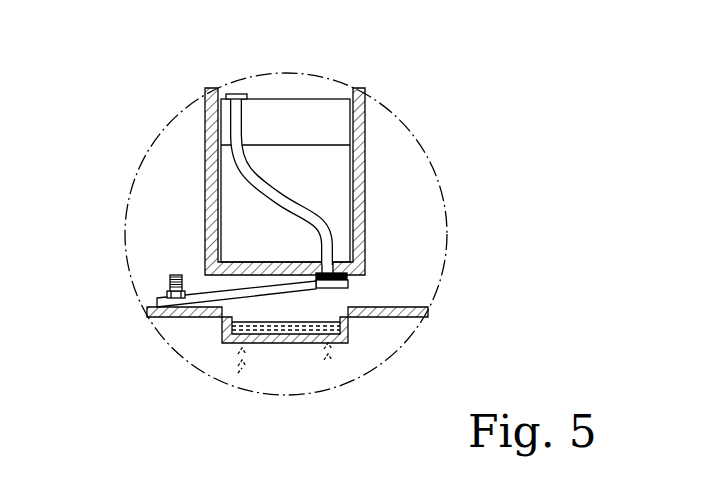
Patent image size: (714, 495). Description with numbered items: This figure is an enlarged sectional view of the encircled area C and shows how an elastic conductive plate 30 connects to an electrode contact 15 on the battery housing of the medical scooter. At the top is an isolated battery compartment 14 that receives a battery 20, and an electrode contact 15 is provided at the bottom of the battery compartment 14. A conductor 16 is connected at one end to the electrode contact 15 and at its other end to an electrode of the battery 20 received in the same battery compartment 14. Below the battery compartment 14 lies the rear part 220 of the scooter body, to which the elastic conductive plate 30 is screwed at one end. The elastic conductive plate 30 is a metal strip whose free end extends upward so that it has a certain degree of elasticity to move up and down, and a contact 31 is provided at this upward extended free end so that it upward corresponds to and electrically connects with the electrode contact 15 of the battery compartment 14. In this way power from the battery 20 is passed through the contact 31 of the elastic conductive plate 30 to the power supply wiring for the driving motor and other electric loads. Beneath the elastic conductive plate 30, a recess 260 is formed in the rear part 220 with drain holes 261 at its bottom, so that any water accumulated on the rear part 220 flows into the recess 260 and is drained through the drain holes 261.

The battery compartment 14 is at (320, 90).
The electrode contact 15 is at (348, 277).
The conductor 16 is at (251, 100).
The battery 20 is at (333, 190).
The elastic conductive plate 30 is at (236, 296).
The contact 31 is at (344, 289).
The rear part 220 is at (150, 316).
The recess 260 is at (230, 311).
The drain hole 261 is at (243, 342).
The encircled area C is at (445, 263).